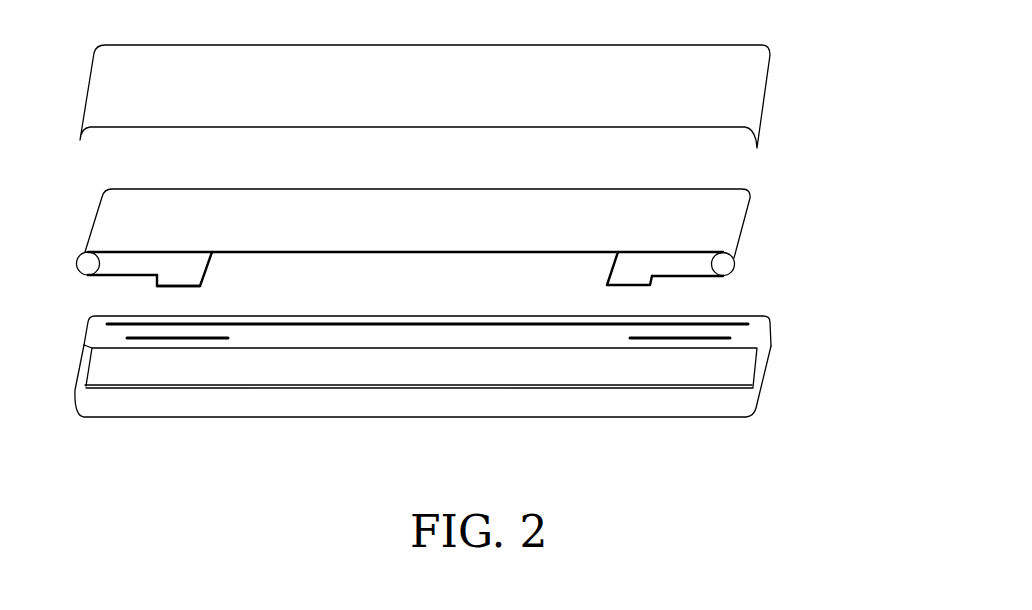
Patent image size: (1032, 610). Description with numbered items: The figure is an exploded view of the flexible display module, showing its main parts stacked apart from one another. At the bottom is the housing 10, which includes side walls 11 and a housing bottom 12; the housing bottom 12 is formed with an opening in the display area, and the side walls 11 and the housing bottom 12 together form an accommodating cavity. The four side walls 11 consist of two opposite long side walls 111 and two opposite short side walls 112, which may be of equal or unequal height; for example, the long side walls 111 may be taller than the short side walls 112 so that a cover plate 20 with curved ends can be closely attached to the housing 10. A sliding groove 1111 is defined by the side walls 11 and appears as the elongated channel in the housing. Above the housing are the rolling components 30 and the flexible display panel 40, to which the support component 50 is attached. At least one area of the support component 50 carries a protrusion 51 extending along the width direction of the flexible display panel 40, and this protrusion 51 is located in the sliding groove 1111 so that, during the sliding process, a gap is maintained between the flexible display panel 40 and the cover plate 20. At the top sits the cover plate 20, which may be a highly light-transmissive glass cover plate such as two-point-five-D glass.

The housing 10 is at (490, 342).
The side walls 11 is at (478, 327).
The long side walls 111 is at (465, 307).
The sliding groove 1111 is at (716, 321).
The short side walls 112 is at (766, 361).
The housing bottom 12 is at (728, 372).
The cover plate 20 is at (720, 90).
The rolling components 30 is at (77, 262).
The flexible display panel 40 is at (703, 208).
The support component 50 is at (126, 252).
The protrusion 51 is at (164, 285).